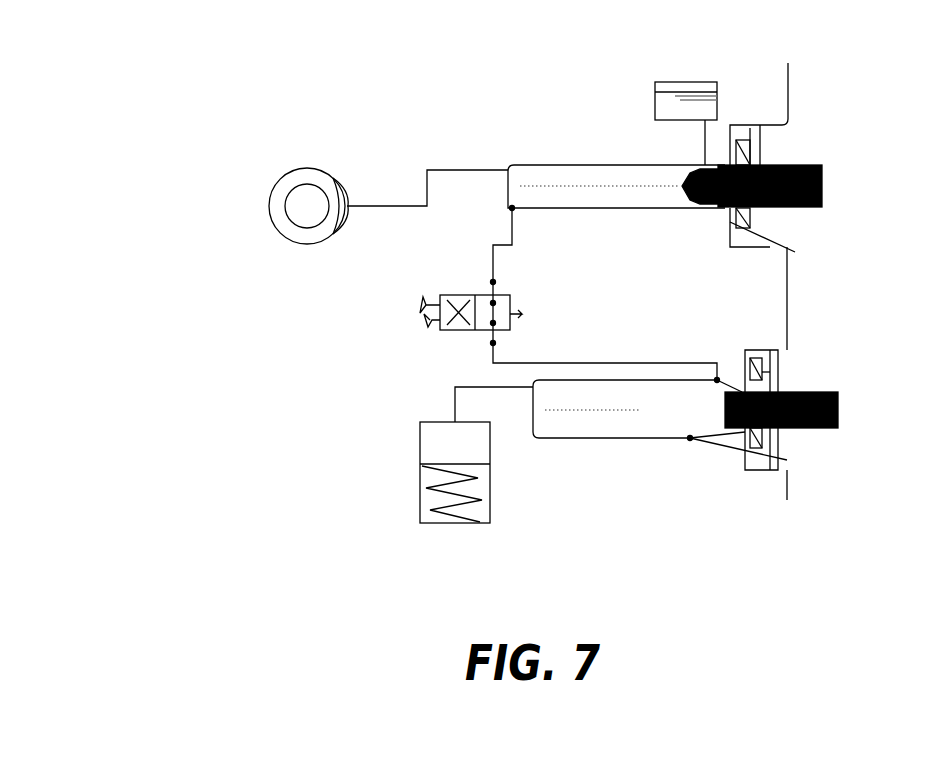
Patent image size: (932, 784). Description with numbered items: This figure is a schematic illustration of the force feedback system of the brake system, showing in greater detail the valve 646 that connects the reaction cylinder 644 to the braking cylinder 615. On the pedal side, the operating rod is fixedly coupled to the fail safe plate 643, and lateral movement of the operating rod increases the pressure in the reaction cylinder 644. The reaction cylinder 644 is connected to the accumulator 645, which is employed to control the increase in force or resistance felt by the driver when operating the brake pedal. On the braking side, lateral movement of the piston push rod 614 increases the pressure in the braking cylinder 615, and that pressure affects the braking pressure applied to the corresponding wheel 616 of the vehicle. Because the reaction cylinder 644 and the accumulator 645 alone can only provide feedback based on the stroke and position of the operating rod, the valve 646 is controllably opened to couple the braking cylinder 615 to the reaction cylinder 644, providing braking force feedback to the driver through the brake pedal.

The wheel 616 is at (285, 170).
The braking cylinder 615 is at (520, 162).
The piston push rod 614 is at (822, 168).
The valve 646 is at (512, 295).
The reaction cylinder 644 is at (607, 432).
The fail safe plate 643 is at (838, 392).
The accumulator 645 is at (420, 448).